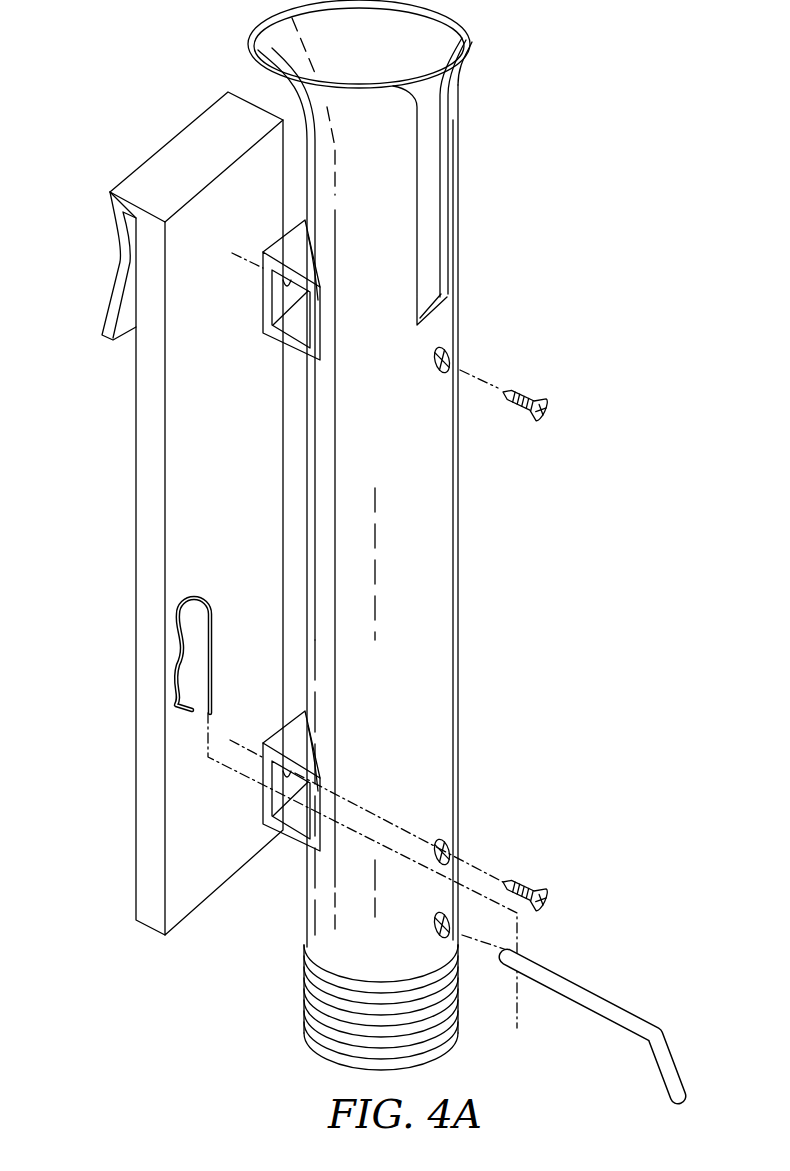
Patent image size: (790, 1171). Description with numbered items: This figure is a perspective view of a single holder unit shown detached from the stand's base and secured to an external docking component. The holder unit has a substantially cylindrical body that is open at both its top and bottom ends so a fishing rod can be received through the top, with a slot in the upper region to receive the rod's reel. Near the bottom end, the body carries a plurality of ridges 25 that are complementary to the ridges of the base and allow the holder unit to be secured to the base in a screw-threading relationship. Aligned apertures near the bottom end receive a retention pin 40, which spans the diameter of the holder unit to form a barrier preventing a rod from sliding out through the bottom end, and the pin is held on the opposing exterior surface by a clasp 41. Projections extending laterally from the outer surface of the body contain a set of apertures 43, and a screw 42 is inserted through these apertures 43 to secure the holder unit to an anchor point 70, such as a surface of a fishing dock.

The ridges 25 is at (303, 995).
The retention pin 40 is at (613, 1002).
The clasp 41 is at (176, 651).
The screw 42 is at (542, 403).
The apertures 43 is at (272, 295).
The anchor point 70 is at (135, 425).